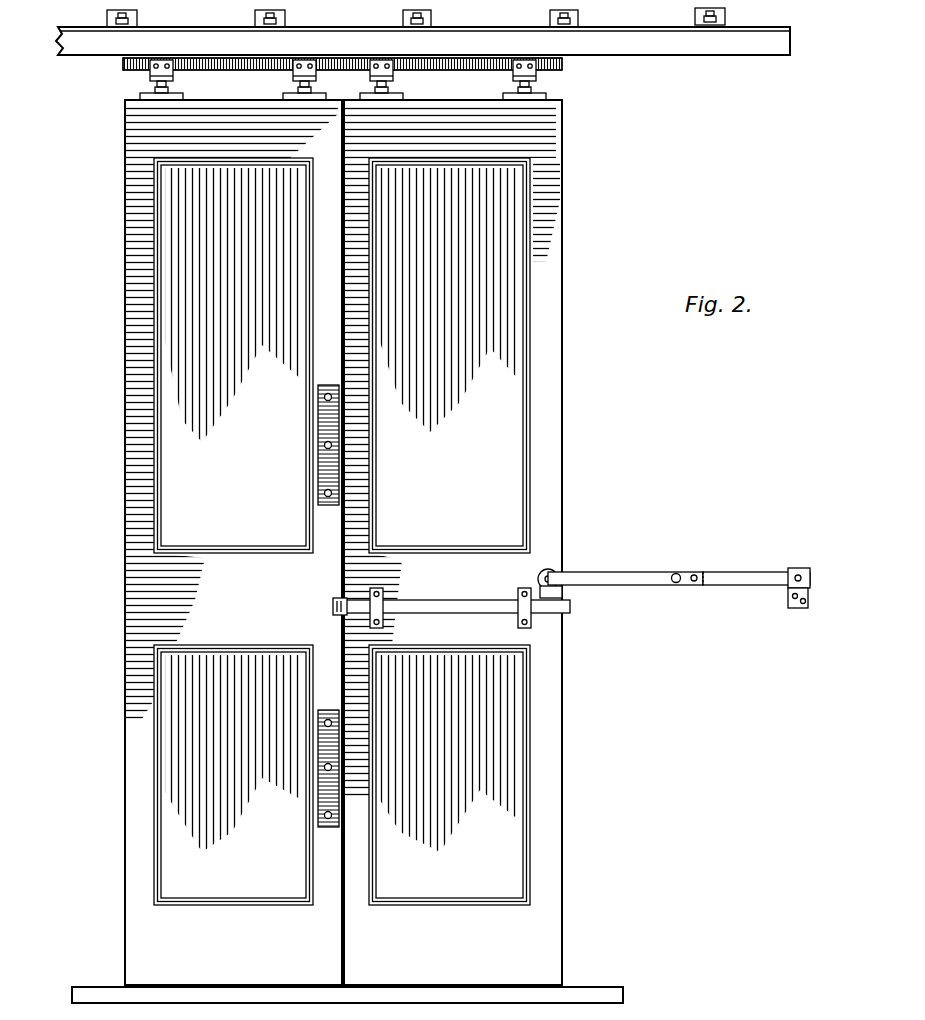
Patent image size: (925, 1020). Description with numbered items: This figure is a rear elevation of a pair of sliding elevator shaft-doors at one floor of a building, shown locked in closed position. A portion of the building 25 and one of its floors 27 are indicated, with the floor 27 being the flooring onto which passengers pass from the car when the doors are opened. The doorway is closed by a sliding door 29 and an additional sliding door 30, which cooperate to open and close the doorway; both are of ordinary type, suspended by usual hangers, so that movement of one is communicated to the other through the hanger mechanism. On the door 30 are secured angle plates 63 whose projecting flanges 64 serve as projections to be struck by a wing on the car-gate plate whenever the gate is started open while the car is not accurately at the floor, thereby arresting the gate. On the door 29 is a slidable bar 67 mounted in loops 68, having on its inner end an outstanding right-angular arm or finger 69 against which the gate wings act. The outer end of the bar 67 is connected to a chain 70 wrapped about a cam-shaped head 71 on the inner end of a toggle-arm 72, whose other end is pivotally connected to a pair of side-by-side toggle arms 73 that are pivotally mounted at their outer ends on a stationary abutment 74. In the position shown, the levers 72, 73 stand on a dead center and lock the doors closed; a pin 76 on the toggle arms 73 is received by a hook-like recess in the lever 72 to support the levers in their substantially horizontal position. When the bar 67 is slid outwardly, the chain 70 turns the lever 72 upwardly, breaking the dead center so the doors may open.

The building 25 is at (622, 967).
The floor 27 is at (622, 967).
The sliding door 29 is at (556, 505).
The additional sliding door 30 is at (233, 542).
The angle plates 63 is at (321, 430).
The projecting flanges 64 is at (320, 480).
The slidable bar 67 is at (492, 586).
The loops 68 is at (370, 594).
The arm or finger 69 is at (334, 608).
The chain 70 is at (552, 570).
The cam-shaped head 71 is at (560, 590).
The toggle-arm 72 is at (612, 576).
The toggle arms 73 is at (750, 576).
The stationary abutment 74 is at (810, 598).
The pin 76 is at (676, 584).